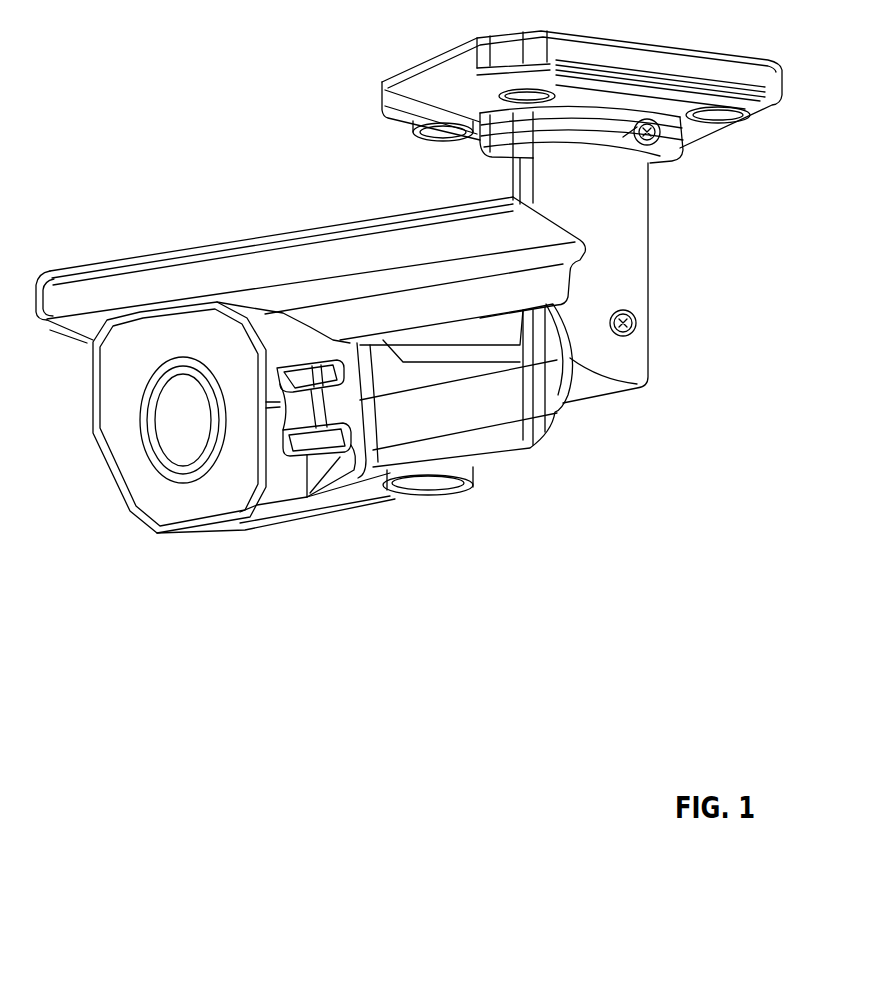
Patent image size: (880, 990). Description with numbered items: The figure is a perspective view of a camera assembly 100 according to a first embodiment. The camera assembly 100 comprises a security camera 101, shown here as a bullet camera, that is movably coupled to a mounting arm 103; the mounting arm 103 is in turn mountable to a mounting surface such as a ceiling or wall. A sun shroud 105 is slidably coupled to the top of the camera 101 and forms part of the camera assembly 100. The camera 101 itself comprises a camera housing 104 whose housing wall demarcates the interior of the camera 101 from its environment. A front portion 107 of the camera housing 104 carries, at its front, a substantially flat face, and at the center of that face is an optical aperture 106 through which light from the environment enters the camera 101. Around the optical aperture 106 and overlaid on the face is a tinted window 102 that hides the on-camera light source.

The camera assembly 100 is at (158, 110).
The security camera 101 is at (91, 478).
The tinted window 102 is at (214, 521).
The mounting arm 103 is at (673, 207).
The camera housing 104 is at (385, 465).
The sun shroud 105 is at (395, 268).
The optical aperture 106 is at (204, 434).
The front portion 107 is at (295, 507).